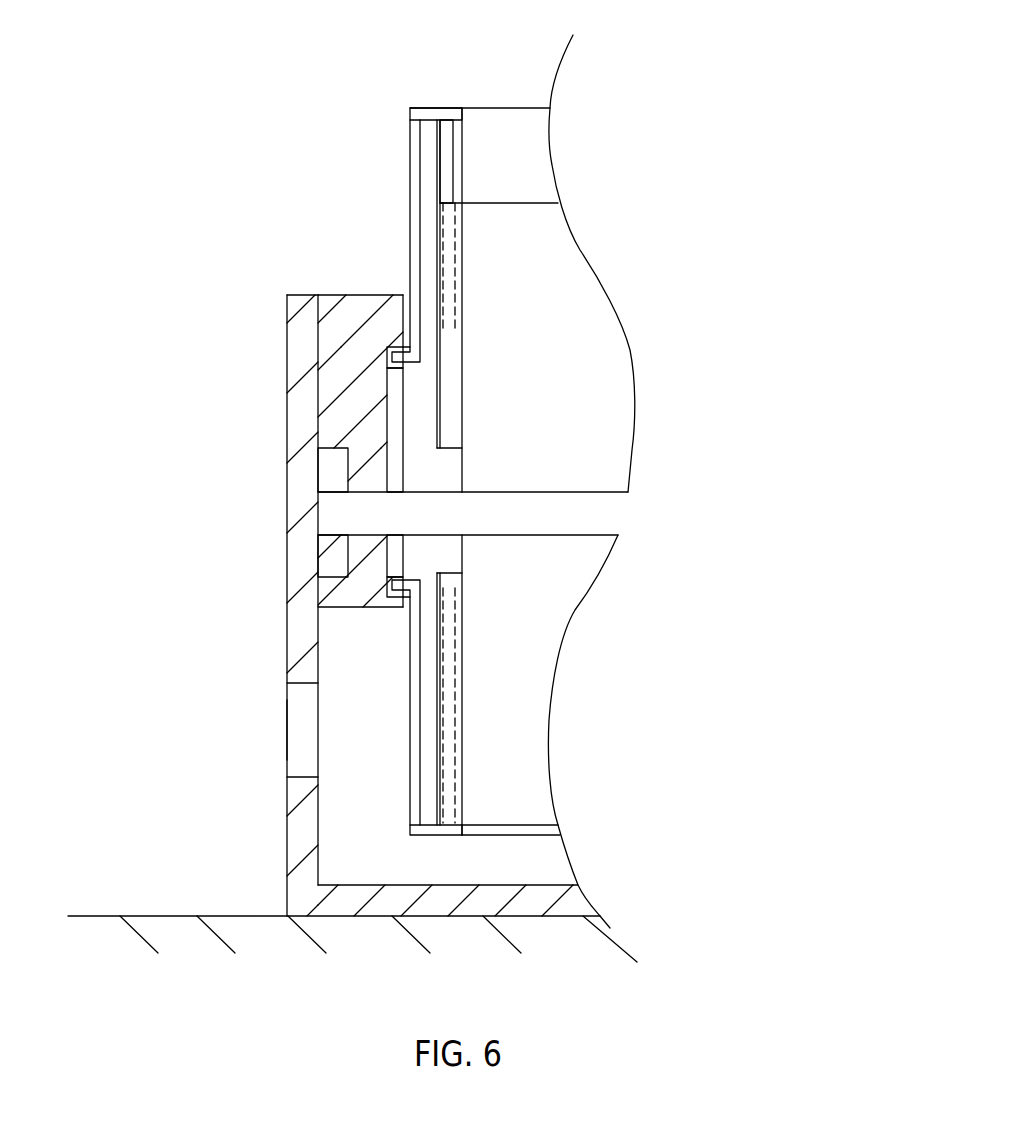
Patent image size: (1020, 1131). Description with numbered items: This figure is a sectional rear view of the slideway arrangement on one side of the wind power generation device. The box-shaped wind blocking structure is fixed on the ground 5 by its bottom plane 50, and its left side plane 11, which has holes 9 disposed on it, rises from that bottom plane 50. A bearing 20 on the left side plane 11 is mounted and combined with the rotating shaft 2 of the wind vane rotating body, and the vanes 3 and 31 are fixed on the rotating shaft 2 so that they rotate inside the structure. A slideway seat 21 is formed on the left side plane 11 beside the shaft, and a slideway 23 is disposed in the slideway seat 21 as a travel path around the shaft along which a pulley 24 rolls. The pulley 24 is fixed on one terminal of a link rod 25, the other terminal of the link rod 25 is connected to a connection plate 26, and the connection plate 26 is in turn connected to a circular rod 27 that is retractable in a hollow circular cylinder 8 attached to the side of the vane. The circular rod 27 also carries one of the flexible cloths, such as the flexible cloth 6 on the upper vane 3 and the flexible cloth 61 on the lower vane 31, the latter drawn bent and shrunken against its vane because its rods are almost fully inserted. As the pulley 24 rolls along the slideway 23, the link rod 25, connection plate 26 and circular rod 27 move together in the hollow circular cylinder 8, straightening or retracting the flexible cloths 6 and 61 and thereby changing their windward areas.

The rotating shaft 2 is at (605, 518).
The vane 3 is at (610, 405).
The ground 5 is at (95, 916).
The flexible cloth 6 is at (535, 148).
The hollow circular cylinder 8 is at (455, 365).
The hole 9 is at (290, 740).
The left side plane 11 is at (290, 580).
The bearing 20 is at (322, 472).
The slideway seat 21 is at (346, 296).
The slideway 23 is at (390, 347).
The pulley 24 is at (398, 367).
The link rod 25 is at (412, 135).
The connection plate 26 is at (428, 113).
The circular rod 27 is at (452, 142).
The vane 31 is at (530, 703).
The bottom plane 50 is at (347, 903).
The flexible cloth 61 is at (553, 827).